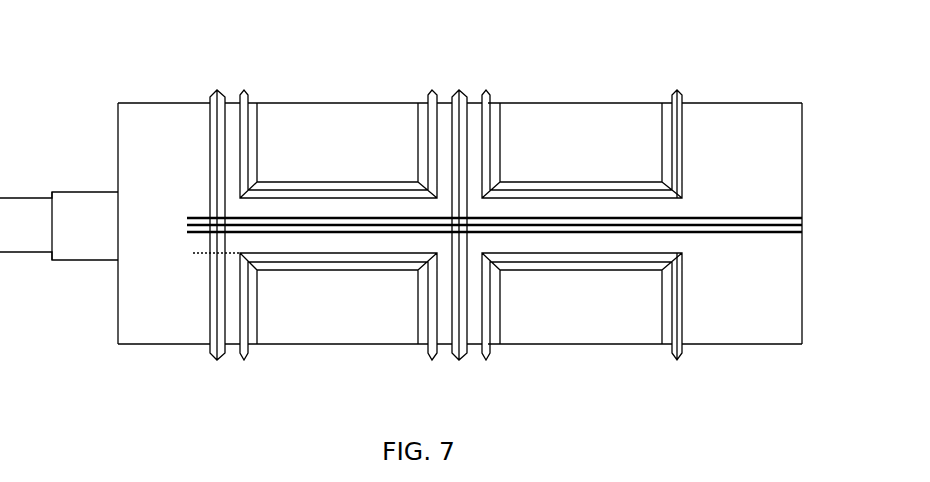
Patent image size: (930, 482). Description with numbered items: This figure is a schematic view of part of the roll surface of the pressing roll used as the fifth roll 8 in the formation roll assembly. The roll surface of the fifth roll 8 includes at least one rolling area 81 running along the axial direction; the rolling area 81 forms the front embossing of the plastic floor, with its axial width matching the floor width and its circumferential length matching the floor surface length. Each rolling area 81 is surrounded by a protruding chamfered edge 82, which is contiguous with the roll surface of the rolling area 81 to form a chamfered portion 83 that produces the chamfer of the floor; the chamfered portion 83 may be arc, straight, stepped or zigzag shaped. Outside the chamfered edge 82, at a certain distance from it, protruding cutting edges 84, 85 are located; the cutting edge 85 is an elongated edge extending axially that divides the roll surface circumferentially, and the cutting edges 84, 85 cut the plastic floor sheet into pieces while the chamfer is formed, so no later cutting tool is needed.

The fifth roll 8 is at (121, 93).
The rolling area 81 is at (580, 97).
The chamfered edge 82 is at (676, 92).
The chamfered portion 83 is at (422, 101).
The cutting edge 84 is at (215, 92).
The cutting edge 85 is at (790, 223).